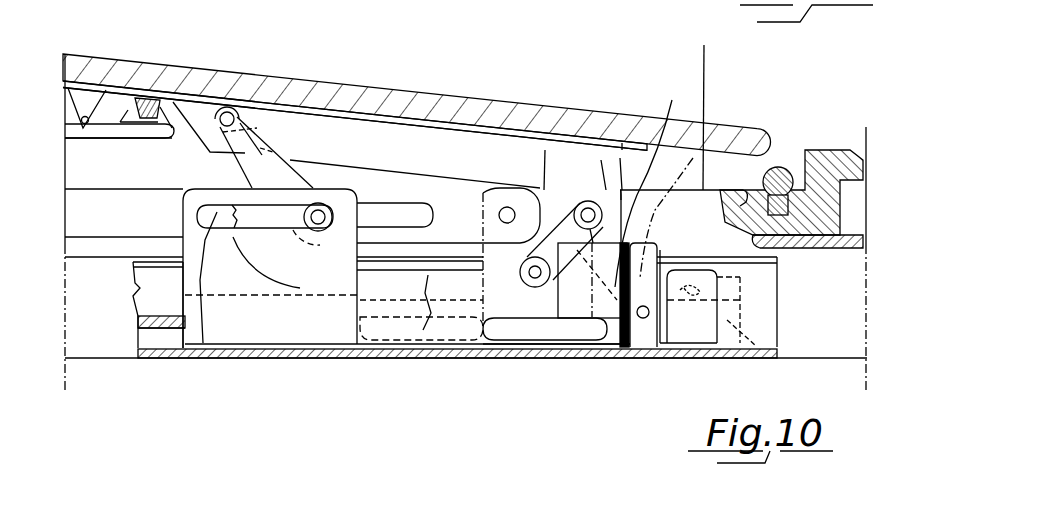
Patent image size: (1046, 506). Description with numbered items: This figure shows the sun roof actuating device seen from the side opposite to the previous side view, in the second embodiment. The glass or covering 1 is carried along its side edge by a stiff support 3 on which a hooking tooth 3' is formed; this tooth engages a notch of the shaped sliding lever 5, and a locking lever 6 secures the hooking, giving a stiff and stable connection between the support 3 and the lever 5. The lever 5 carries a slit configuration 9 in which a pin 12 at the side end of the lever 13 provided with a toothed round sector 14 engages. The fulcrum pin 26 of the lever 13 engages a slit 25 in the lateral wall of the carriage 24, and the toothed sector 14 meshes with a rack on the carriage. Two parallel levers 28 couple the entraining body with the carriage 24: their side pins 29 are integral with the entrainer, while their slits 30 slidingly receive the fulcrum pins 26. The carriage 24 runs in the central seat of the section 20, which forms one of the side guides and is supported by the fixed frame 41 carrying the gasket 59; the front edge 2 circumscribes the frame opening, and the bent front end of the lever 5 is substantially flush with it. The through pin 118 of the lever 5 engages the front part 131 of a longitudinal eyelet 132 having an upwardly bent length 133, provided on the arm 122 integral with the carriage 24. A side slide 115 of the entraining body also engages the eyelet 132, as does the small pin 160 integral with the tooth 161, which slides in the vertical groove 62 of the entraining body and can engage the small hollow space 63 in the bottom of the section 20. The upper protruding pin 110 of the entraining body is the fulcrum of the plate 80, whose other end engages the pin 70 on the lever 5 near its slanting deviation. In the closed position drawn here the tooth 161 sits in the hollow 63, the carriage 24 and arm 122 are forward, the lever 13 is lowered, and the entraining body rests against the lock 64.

The glass or covering 1 is at (462, 100).
The front edge 2 is at (713, 143).
The stiff support 3 is at (610, 132).
The hooking tooth 3' is at (119, 70).
The shaped sliding lever 5 is at (517, 160).
The locking lever 6 is at (112, 135).
The slit configuration 9 is at (307, 127).
The pin 12 is at (224, 107).
The lever with toothed round sector 13 is at (262, 157).
The toothed round sector 14 is at (250, 218).
The section 20 is at (760, 292).
The carriage 24 is at (199, 347).
The slit 25 is at (163, 357).
The fulcrum pin 26 is at (318, 222).
The parallel lever 28 is at (430, 203).
The side pin 29 is at (480, 345).
The slit 30 is at (384, 215).
The fixed frame 41 is at (837, 147).
The gasket 59 is at (780, 167).
The vertical groove 62 is at (679, 149).
The small hollow space 63 is at (653, 360).
The lock 64 is at (728, 319).
The pin 70 is at (615, 336).
The plate 80 is at (607, 180).
The upper protruding pin 110 is at (545, 190).
The side slide 115 is at (522, 334).
The through pin 118 is at (790, 352).
The arm 122 is at (400, 344).
The front part of eyelet 131 is at (753, 357).
The longitudinal eyelet 132 is at (450, 330).
The upwardly bent length 133 is at (674, 360).
The small pin 160 is at (643, 352).
The tooth 161 is at (627, 350).